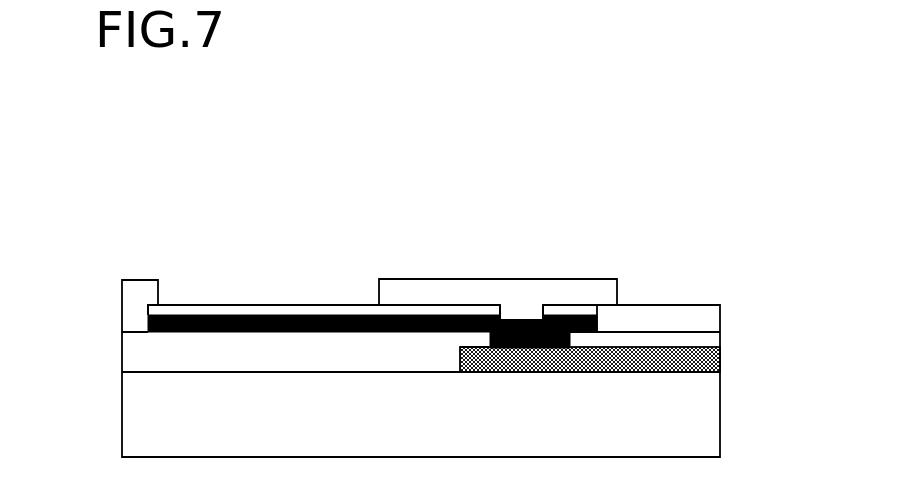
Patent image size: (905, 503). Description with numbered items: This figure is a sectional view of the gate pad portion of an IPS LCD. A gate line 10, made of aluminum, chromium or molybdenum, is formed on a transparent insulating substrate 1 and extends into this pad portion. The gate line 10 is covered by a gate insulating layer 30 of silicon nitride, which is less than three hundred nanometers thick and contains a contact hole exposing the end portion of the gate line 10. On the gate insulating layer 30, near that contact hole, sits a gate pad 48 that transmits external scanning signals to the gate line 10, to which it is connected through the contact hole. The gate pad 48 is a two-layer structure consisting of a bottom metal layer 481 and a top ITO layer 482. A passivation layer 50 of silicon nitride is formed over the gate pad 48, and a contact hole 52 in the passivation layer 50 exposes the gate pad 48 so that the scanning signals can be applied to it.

The transparent insulating substrate 1 is at (703, 405).
The gate line 10 is at (703, 358).
The gate insulating layer 30 is at (133, 348).
The gate pad 48 is at (372, 261).
The bottom metal layer 481 is at (203, 314).
The top ITO layer 482 is at (202, 223).
The passivation layer 50 is at (133, 292).
The contact hole 52 is at (353, 277).